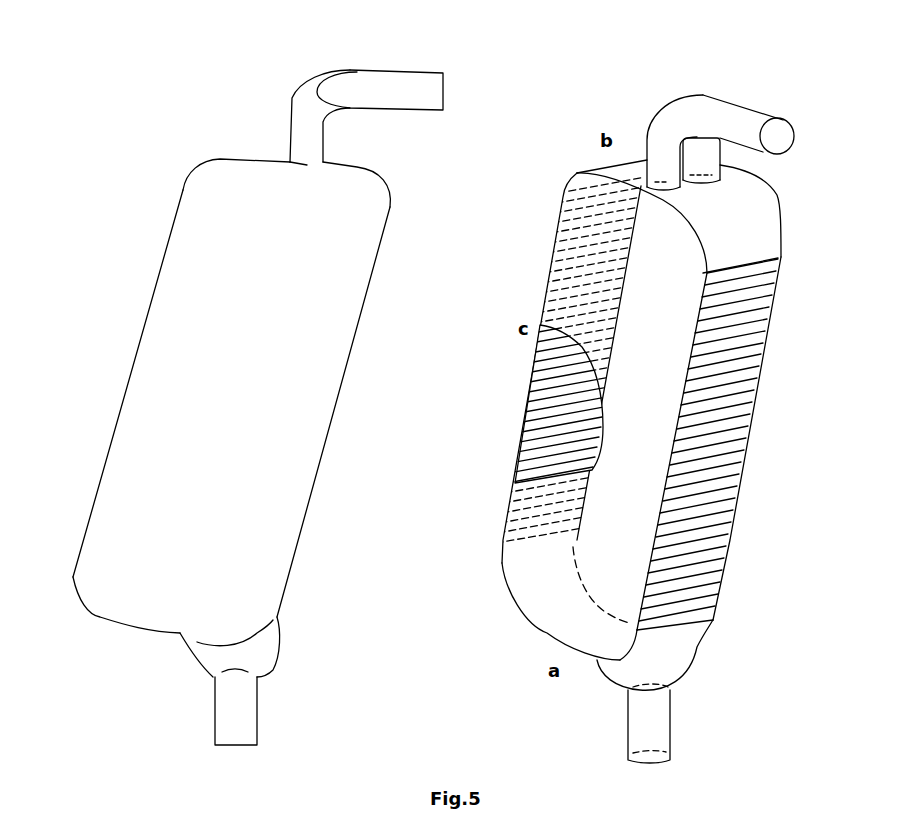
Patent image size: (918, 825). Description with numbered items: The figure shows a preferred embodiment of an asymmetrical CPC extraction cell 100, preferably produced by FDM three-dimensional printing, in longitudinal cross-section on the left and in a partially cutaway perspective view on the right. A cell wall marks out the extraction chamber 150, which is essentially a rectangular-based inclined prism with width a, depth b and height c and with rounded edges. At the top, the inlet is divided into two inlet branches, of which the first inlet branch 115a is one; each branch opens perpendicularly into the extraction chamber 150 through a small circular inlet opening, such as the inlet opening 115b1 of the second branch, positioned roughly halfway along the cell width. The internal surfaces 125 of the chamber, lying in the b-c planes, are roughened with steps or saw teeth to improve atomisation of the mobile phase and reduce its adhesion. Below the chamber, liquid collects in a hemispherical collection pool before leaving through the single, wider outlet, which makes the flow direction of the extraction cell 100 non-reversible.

The extraction cell 100 is at (92, 80).
The inlet branch 115a is at (660, 117).
The inlet opening 115b1 is at (290, 155).
The internal surfaces 125 is at (533, 421).
The extraction chamber 150 is at (355, 217).